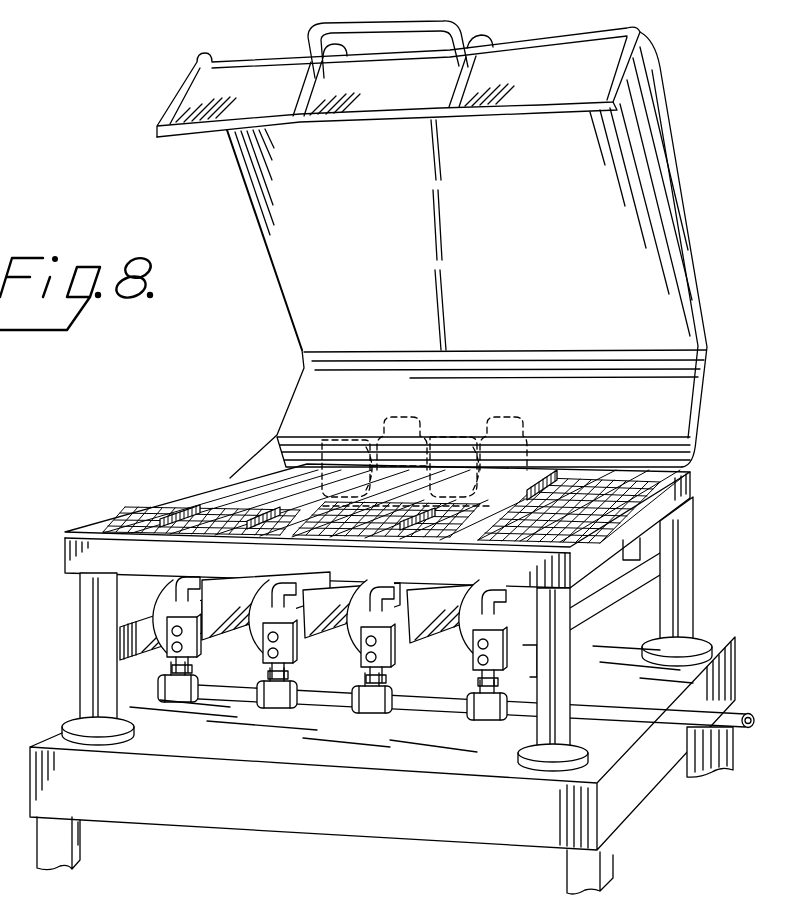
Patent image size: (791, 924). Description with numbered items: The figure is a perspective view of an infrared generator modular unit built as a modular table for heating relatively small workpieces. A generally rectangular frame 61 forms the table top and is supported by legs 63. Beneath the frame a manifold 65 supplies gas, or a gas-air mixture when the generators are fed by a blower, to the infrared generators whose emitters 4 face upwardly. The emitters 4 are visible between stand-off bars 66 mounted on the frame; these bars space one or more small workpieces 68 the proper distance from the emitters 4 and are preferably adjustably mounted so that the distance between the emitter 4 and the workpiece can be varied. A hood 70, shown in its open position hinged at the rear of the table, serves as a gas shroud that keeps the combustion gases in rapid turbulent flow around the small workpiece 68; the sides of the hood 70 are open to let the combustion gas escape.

The emitter 4 is at (577, 497).
The frame 61 is at (131, 529).
The leg 63 is at (82, 660).
The manifold 65 is at (616, 676).
The stand-off bar 66 is at (277, 508).
The workpiece 68 is at (444, 467).
The hood 70 is at (657, 177).